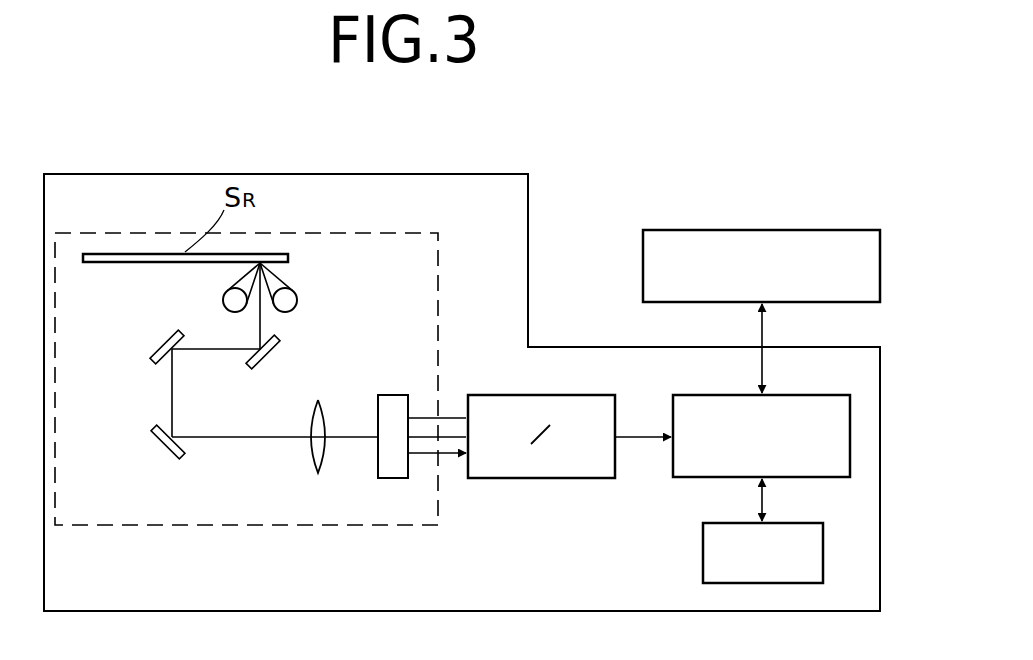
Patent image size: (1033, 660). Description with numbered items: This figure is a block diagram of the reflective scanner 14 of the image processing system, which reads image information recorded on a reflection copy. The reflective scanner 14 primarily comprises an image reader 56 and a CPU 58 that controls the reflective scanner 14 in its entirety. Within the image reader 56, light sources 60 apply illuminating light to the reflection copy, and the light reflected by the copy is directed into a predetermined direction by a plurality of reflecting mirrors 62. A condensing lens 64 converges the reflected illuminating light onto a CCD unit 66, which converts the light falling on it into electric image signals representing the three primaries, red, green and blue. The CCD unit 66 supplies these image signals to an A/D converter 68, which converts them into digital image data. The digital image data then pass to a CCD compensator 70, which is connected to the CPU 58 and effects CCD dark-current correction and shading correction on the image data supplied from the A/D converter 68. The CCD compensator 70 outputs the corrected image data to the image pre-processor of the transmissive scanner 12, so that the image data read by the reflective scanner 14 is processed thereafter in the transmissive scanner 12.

The transmissive scanner 12 is at (790, 230).
The reflective scanner 14 is at (465, 171).
The image reader 56 is at (263, 527).
The CPU 58 is at (703, 550).
The light sources 60 is at (230, 301).
The reflecting mirrors 62 is at (155, 345).
The condensing lens 64 is at (311, 460).
The CCD unit 66 is at (390, 394).
The A/D converter 68 is at (505, 394).
The CCD compensator 70 is at (797, 395).